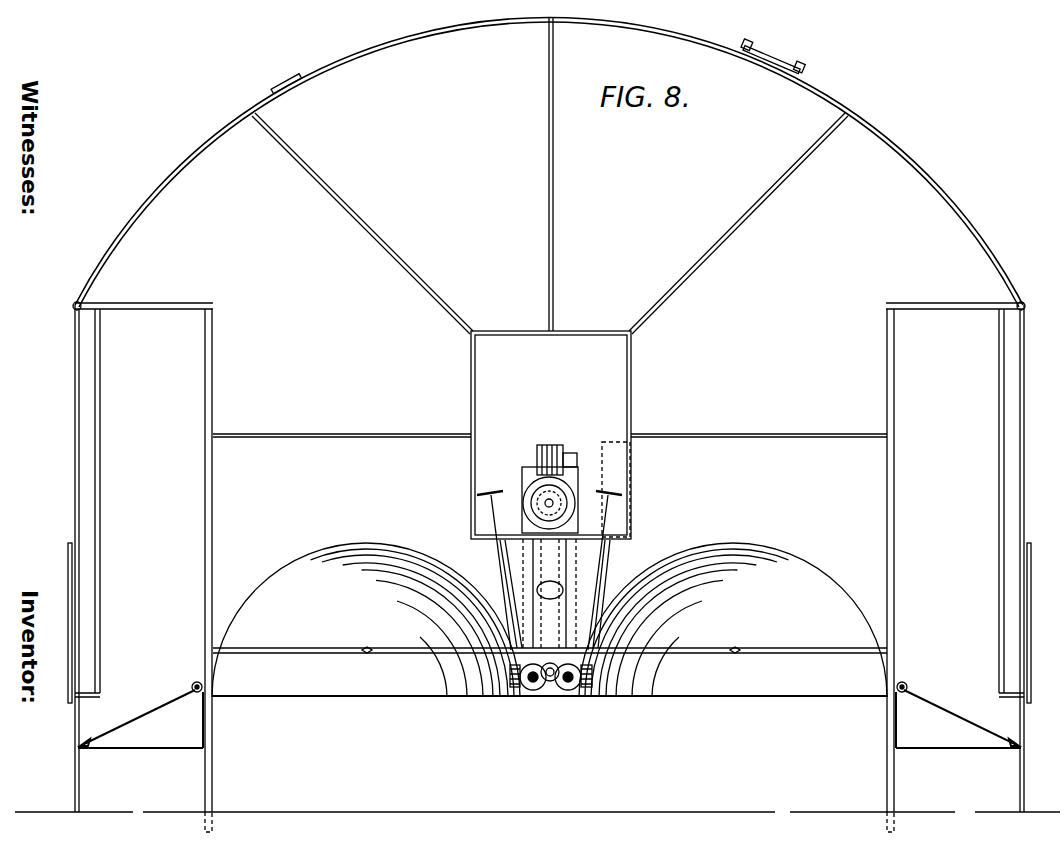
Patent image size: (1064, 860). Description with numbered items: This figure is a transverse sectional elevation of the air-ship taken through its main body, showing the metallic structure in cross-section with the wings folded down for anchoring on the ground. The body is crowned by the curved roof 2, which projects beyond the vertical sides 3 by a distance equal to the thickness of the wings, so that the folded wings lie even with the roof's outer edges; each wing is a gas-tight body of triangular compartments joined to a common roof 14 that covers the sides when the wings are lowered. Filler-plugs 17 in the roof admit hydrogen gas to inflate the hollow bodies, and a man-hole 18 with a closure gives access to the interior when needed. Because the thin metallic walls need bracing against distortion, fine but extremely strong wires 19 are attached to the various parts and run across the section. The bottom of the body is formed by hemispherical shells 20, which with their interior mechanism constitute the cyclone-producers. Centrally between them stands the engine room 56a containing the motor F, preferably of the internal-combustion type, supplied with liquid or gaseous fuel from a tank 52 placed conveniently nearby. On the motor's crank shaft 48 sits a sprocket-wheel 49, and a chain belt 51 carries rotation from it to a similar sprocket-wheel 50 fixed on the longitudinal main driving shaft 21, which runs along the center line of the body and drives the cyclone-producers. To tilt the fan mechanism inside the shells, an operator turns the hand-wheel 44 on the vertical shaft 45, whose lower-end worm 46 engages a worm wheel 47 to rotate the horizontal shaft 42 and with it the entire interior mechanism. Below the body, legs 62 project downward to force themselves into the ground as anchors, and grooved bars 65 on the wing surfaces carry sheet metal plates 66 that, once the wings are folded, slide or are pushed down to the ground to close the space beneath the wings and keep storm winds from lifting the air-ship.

The roof 2 is at (202, 146).
The sides 3 is at (217, 357).
The roof 14 is at (68, 473).
The filler-plugs 17 is at (284, 87).
The man-hole 18 is at (772, 56).
The wires 19 is at (383, 229).
The hemispherical shells 20 is at (550, 611).
The main driving shaft 21 is at (555, 684).
The shaft 42 is at (528, 691).
The hand-wheel 44 is at (645, 492).
The shaft 45 is at (499, 557).
The worm 46 is at (510, 676).
The worm wheel 47 is at (592, 669).
The crank shaft 48 is at (531, 506).
The sprocket-wheel 49 is at (572, 508).
The sprocket-wheel 50 is at (551, 683).
The chain belt 51 is at (549, 593).
The tank 52 is at (630, 453).
The engine room 56a is at (551, 435).
The legs 62 is at (887, 770).
The grooved bars 65 is at (68, 561).
The sheet metal plates 66 is at (75, 721).
The motor F is at (552, 444).